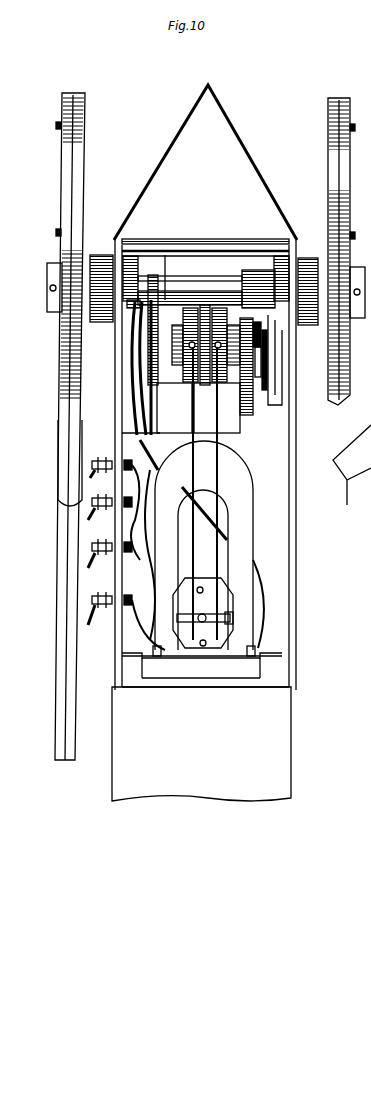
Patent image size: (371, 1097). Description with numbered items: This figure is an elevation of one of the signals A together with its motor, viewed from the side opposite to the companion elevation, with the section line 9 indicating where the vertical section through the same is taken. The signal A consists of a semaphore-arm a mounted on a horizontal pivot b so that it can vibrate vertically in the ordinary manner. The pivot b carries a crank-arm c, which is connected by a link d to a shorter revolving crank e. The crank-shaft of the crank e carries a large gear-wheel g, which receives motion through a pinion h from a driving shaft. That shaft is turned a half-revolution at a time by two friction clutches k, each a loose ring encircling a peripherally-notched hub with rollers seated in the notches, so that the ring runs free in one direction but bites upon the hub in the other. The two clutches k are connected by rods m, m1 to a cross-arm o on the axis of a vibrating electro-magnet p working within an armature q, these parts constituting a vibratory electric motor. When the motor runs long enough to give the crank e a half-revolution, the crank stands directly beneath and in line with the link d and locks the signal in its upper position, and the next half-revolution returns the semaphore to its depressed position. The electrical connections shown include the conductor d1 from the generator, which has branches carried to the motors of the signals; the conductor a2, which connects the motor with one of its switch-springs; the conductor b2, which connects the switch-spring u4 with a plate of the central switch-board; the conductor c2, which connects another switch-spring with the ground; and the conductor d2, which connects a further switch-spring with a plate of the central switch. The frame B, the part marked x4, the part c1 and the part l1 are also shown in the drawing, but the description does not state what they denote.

The signal A is at (300, 170).
The section line 9 9 is at (165, 270).
The semaphore-arm a is at (207, 426).
The horizontal pivot b is at (206, 290).
The post x4 is at (165, 302).
The friction clutch k is at (206, 345).
The large gear-wheel g is at (241, 366).
The pinion h is at (262, 335).
The crank-arm c is at (262, 345).
The link d is at (268, 372).
The revolving crank e is at (274, 372).
The rod m is at (210, 494).
The rod m1 is at (193, 494).
The switch-spring u4 is at (198, 408).
The conductor c2 is at (150, 417).
The conductor d2 is at (130, 340).
The conductor a2 is at (150, 452).
The conductor b2 is at (130, 392).
The contact c1 is at (127, 326).
The conductor d1 is at (130, 625).
The frame B is at (128, 608).
The armature q is at (178, 598).
The cross-arm o is at (177, 619).
The vibrating electro-magnet p is at (234, 622).
The foot l1 is at (202, 638).